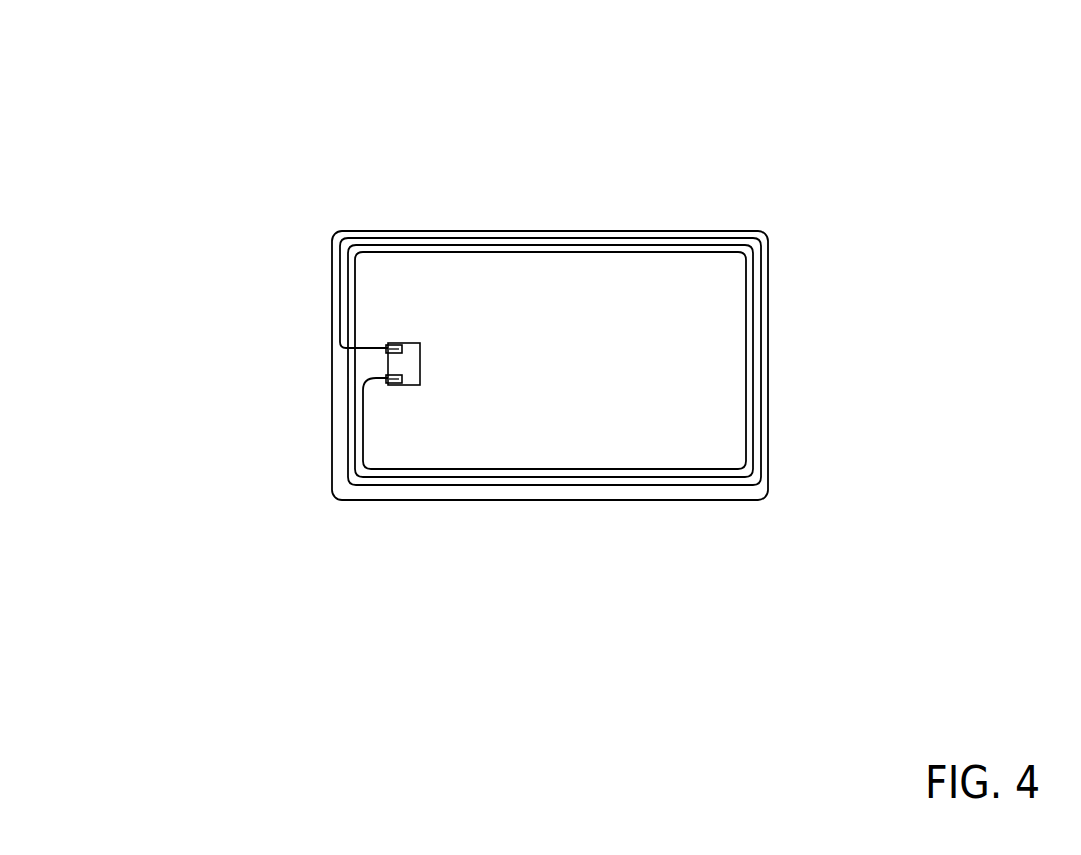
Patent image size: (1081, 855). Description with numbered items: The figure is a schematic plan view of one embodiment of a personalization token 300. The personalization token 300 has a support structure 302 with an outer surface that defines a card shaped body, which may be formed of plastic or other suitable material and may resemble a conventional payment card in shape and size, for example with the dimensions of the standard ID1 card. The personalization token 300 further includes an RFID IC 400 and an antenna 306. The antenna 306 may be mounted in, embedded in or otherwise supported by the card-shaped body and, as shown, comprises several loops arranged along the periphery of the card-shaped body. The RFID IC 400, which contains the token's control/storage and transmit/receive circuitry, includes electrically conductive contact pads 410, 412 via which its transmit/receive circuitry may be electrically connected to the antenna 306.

The personalization token 300 is at (192, 52).
The support structure 302 is at (567, 270).
The antenna 306 is at (726, 231).
The RFID IC 400 is at (422, 348).
The electrically conductive contact pad 410 is at (398, 344).
The electrically conductive contact pad 412 is at (399, 384).